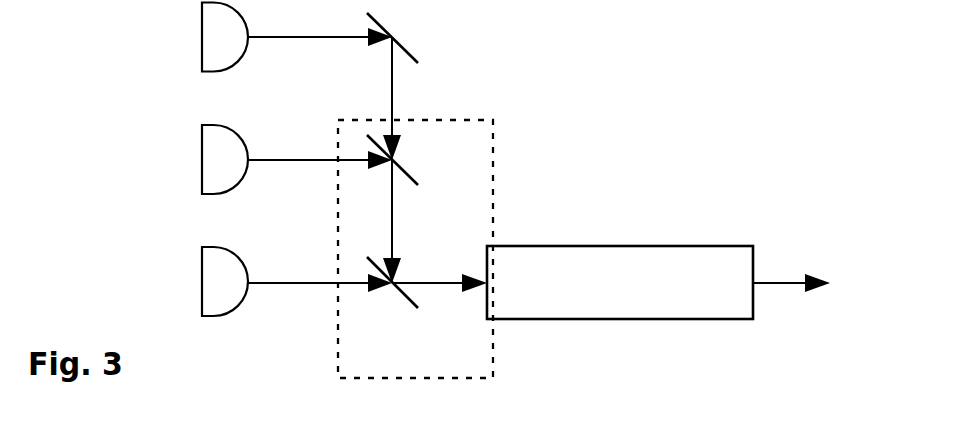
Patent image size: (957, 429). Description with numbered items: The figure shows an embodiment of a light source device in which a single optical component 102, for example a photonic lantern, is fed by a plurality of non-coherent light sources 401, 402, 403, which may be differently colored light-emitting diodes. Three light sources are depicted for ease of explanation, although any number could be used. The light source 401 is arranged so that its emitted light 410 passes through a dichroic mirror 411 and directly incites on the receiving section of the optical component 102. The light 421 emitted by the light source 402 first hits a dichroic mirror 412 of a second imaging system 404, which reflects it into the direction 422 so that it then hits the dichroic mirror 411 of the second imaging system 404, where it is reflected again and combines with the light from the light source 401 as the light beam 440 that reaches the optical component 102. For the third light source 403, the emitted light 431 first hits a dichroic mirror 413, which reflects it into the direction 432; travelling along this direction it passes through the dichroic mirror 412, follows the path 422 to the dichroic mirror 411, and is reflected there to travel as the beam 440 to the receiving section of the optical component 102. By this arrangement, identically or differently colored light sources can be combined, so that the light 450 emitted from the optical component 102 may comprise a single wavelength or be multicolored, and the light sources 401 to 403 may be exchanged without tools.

The optical component 102 is at (683, 245).
The light source 401 is at (202, 263).
The light source 402 is at (202, 142).
The light source 403 is at (202, 20).
The second imaging system 404 is at (493, 145).
The emitted light 410 is at (298, 284).
The dichroic mirror 411 is at (403, 297).
The dichroic mirror 412 is at (408, 165).
The dichroic mirror 413 is at (408, 50).
The light emitted by light source 402 421 is at (297, 161).
The direction 422 is at (393, 207).
The light emitted by light source 403 431 is at (297, 38).
The direction 432 is at (393, 85).
The light beam 440 is at (442, 284).
The light emitted from the optical component 450 is at (775, 285).